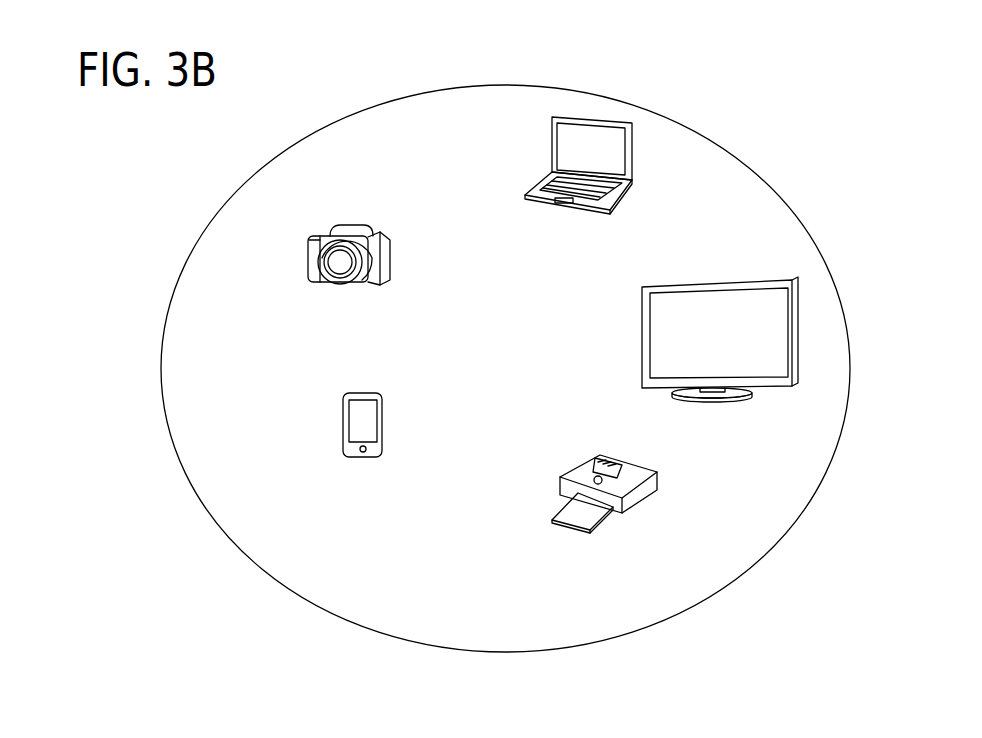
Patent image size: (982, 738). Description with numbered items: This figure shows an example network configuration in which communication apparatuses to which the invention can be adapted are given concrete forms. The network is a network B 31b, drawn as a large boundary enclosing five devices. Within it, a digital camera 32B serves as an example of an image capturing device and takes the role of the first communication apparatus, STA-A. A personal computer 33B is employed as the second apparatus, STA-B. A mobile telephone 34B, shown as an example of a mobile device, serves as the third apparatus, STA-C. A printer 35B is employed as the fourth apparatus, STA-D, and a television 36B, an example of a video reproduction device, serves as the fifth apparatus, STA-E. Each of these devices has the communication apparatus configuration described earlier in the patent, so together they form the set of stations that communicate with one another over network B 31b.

The network B 31b is at (622, 637).
The digital camera 32B is at (310, 250).
The personal computer 33B is at (560, 143).
The mobile telephone 34B is at (352, 410).
The printer 35B is at (563, 484).
The television 36B is at (655, 331).